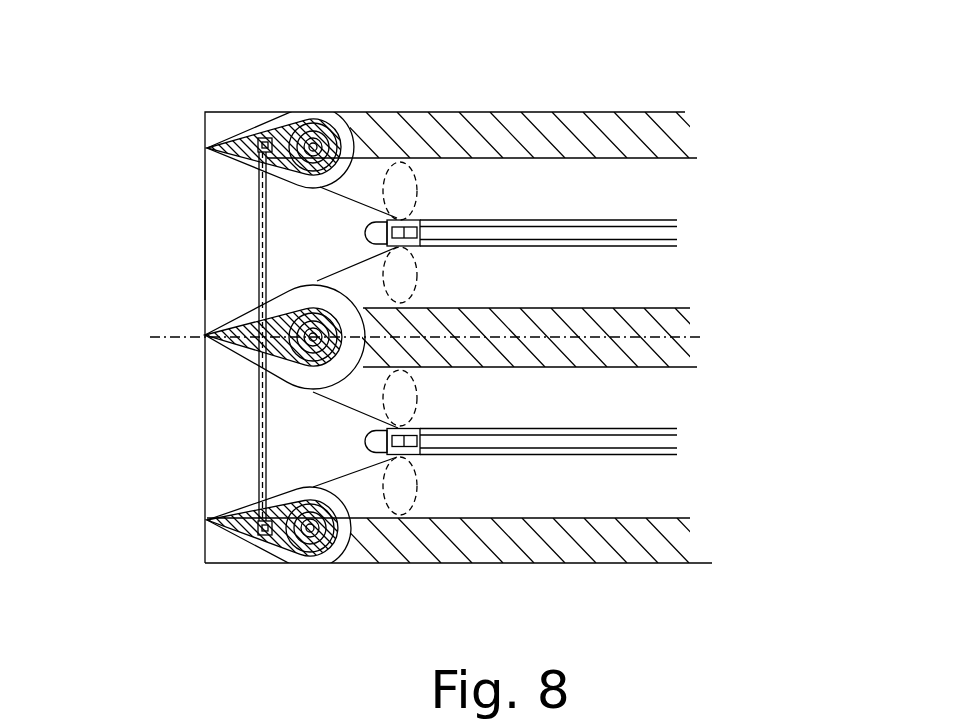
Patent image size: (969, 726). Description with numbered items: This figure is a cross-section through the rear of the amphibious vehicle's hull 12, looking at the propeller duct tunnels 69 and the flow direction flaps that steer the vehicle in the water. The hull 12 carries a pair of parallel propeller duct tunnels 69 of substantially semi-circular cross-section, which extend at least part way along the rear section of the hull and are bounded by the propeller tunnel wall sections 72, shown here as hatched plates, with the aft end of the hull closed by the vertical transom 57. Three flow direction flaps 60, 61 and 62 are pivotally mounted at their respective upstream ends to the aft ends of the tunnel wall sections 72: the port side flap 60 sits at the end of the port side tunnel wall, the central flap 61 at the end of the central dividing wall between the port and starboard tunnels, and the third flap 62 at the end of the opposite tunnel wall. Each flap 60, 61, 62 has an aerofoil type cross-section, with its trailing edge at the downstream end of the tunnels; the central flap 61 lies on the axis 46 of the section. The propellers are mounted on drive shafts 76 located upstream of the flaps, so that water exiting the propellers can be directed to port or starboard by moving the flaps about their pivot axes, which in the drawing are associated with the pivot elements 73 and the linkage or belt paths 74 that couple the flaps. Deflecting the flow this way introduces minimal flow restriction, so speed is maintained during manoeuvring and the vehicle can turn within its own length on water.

The hull 12 is at (207, 565).
The central axis 46 is at (167, 337).
The transom 57 is at (205, 243).
The port side flap 60 is at (207, 148).
The central flap 61 is at (205, 335).
The flow direction flap 62 is at (207, 520).
The propeller duct tunnels 69 is at (665, 160).
The propeller tunnel wall sections 72 is at (590, 130).
The pulley 73 is at (290, 132).
The belt 74 is at (403, 163).
The drive shafts 76 is at (541, 230).